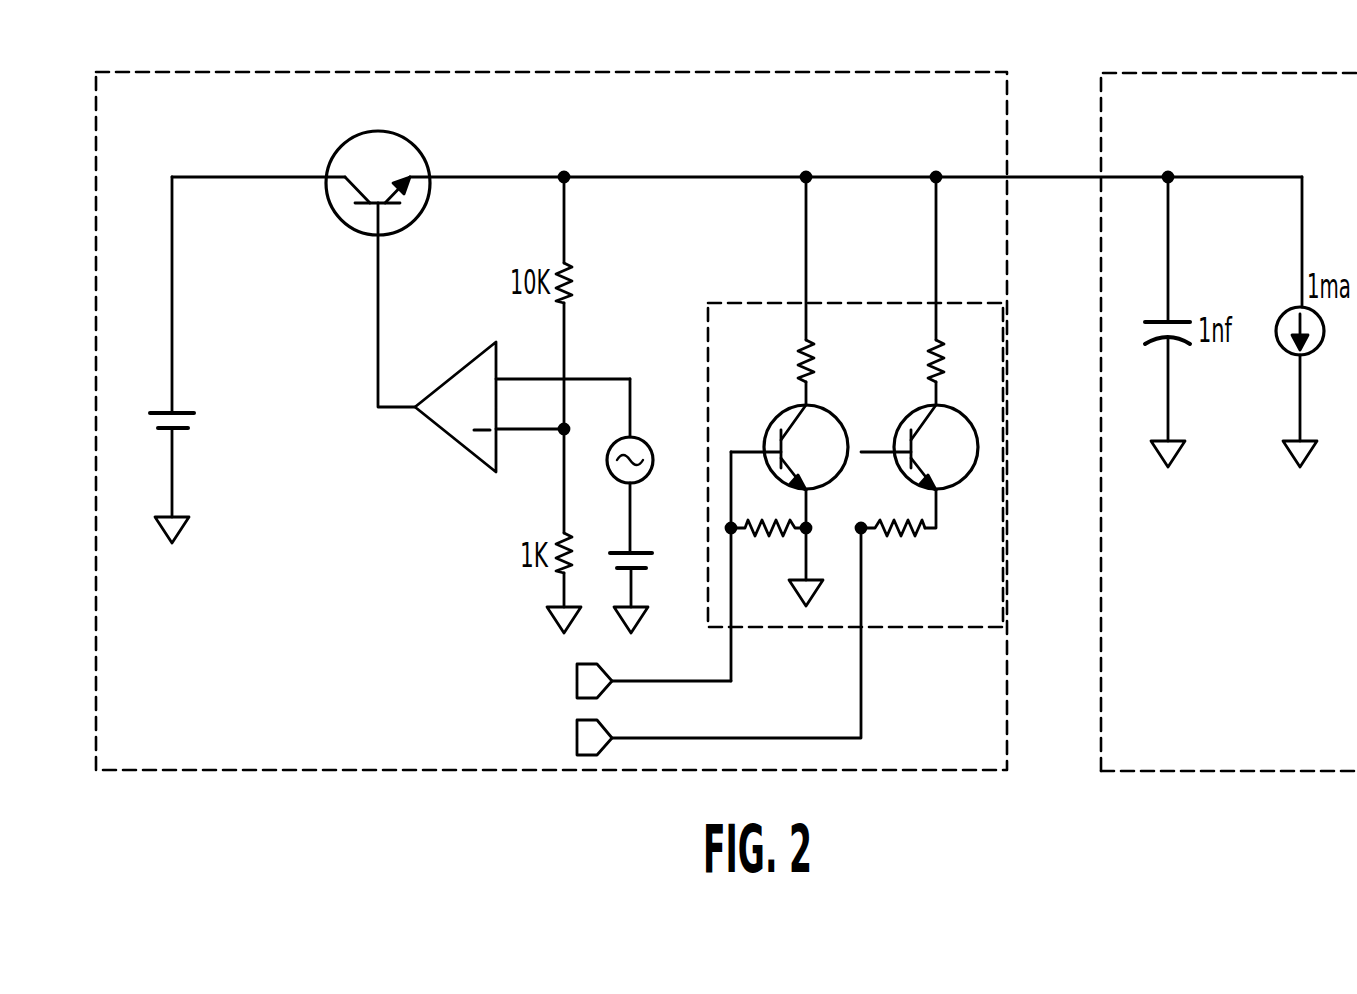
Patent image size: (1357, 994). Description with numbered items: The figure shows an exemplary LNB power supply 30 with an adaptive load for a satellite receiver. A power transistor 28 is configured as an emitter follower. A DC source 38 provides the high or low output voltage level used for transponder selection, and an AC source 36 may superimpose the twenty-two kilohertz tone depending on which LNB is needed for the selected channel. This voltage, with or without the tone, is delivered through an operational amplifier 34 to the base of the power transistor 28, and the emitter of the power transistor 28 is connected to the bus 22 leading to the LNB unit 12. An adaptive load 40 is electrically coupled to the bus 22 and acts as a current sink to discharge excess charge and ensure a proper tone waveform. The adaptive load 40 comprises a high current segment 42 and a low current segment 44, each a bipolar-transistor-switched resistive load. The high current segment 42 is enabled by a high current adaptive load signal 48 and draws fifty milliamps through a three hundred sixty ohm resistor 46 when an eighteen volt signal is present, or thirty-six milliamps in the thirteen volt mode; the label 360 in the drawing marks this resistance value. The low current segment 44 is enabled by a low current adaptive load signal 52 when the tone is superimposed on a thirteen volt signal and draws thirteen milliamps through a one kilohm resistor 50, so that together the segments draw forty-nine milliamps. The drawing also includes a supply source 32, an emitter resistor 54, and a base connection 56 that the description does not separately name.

The LNB unit 12 is at (1258, 72).
The bus 22 is at (1046, 175).
The power transistor 28 is at (328, 158).
The LNB power supply 30 is at (130, 70).
The voltage source 32 is at (168, 410).
The operational amplifier 34 is at (465, 378).
The AC source 36 is at (641, 436).
The DC source 38 is at (643, 571).
The adaptive load 40 is at (736, 302).
The high current segment 42 is at (938, 400).
The low current segment 44 is at (808, 398).
The 360 ohm resistor 46 is at (940, 356).
The high current adaptive load signal 48 is at (575, 738).
The 1 K ohm resistor 50 is at (801, 357).
The low current adaptive load signal 52 is at (575, 681).
The second emitter resistor 54 is at (940, 488).
The first transistor base 56 is at (772, 420).
The transistor pair 360 is at (896, 350).